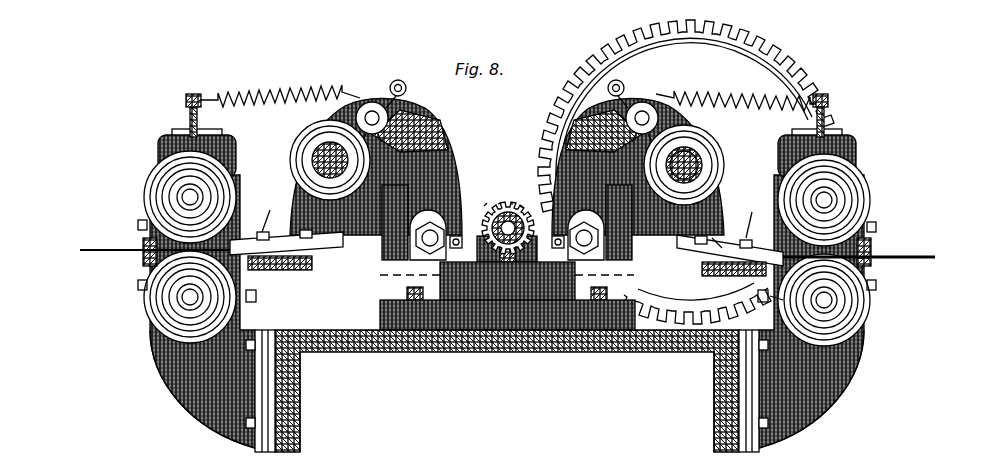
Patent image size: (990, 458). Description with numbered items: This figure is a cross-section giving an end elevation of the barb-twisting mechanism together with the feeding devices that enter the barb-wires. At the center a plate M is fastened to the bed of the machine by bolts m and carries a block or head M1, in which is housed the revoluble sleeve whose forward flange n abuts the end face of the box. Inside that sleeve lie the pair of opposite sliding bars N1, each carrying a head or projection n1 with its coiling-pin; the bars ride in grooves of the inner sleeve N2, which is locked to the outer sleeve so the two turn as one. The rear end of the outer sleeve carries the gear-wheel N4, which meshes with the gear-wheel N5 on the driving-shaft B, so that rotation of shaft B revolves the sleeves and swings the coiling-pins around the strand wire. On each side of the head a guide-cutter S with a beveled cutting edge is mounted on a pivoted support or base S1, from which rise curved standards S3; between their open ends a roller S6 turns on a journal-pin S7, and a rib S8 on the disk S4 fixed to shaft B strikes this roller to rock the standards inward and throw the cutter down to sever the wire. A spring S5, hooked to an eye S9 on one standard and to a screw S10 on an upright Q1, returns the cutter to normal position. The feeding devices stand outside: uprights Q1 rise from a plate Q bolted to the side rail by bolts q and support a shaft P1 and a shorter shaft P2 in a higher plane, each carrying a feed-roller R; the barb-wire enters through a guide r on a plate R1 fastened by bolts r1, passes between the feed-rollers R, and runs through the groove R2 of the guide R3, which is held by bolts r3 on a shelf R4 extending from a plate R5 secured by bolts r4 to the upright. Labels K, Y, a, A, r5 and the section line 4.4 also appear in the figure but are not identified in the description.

The gear-wheel N5 is at (558, 94).
The head or projection n1 is at (508, 228).
The flange or rim n is at (486, 204).
The sleeve N2 is at (500, 203).
The gear-wheel N4 is at (512, 203).
The sliding bars N1 is at (522, 205).
The guide-cutter S is at (648, 214).
The support or base S1 is at (503, 230).
The standard or upright S3 is at (566, 152).
The disk S4 is at (284, 150).
The spring S5 is at (308, 88).
The roller S6 is at (402, 130).
The journal-pin S7 is at (392, 112).
The projection or rib S8 is at (318, 126).
The eye S9 is at (400, 80).
The screw or pin S10 is at (842, 108).
The driving-shaft B is at (700, 160).
The roller housing cap K is at (204, 182).
The shaft P2 is at (875, 174).
The shaft P1 is at (183, 305).
The feed-rollers R is at (204, 197).
The plate R1 is at (138, 228).
The guide r is at (140, 247).
The bolts r1 is at (140, 220).
The shaft axis line Y is at (494, 252).
The uprights or standards Q1 is at (180, 380).
The plate Q is at (262, 395).
The bolts q is at (257, 347).
The frame leg a is at (292, 402).
The base frame A is at (507, 391).
The bolts m is at (495, 315).
The plate M is at (507, 295).
The block or head M1 is at (507, 270).
The guide groove or recess R2 is at (366, 246).
The guide R3 is at (715, 268).
The shelf R4 is at (258, 296).
The plate R5 is at (507, 268).
The bolts r3 is at (505, 228).
The bolts r4 is at (501, 245).
The rod pin r5 is at (715, 231).
The section line 4.4 is at (770, 296).